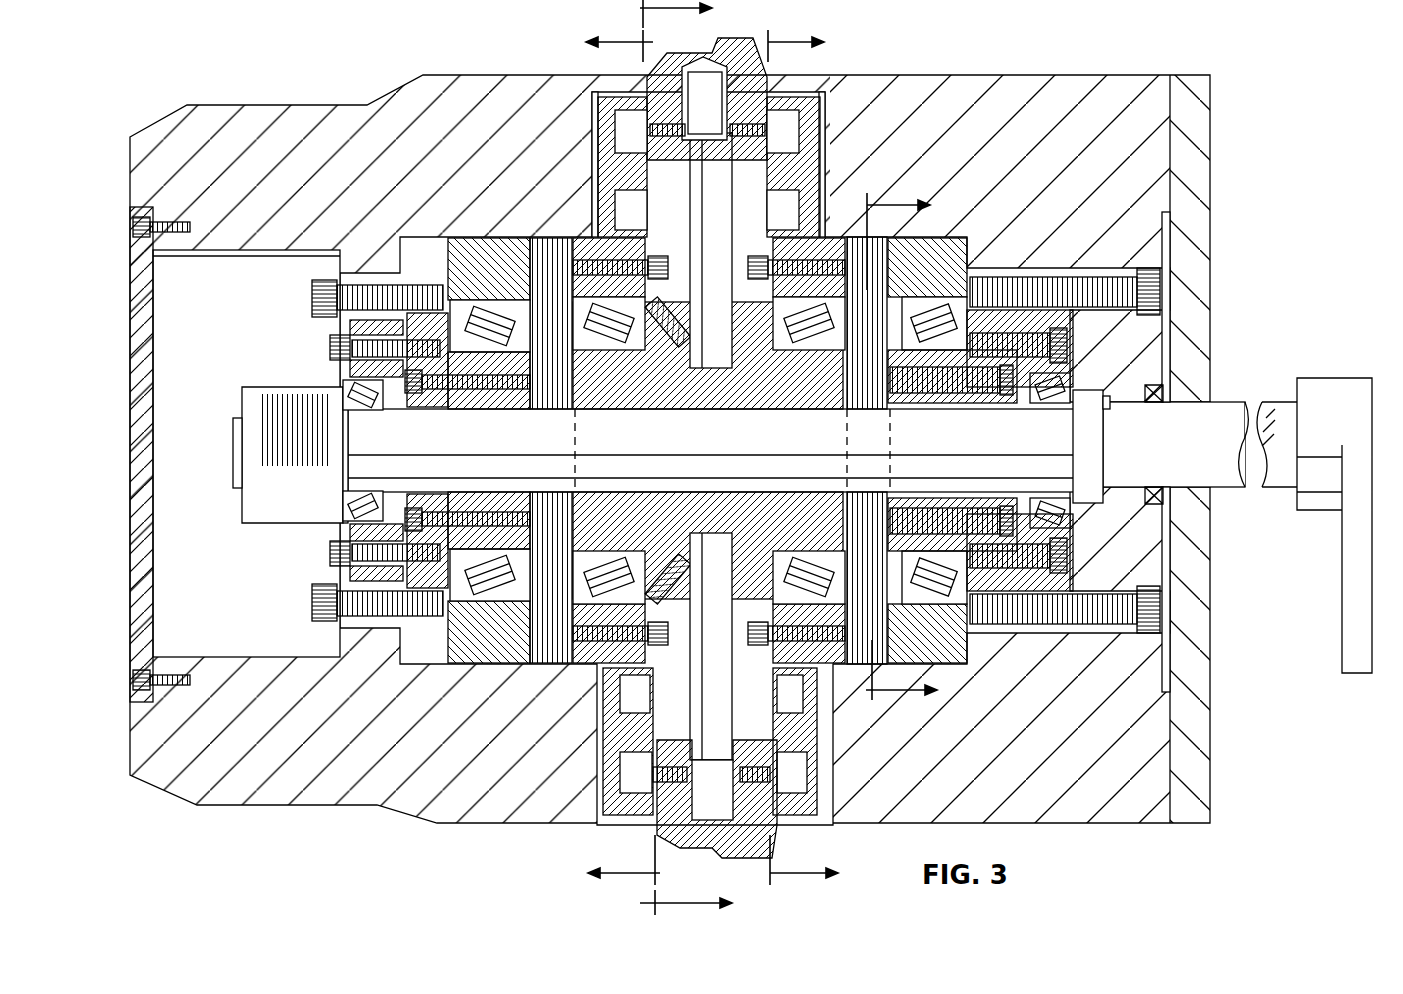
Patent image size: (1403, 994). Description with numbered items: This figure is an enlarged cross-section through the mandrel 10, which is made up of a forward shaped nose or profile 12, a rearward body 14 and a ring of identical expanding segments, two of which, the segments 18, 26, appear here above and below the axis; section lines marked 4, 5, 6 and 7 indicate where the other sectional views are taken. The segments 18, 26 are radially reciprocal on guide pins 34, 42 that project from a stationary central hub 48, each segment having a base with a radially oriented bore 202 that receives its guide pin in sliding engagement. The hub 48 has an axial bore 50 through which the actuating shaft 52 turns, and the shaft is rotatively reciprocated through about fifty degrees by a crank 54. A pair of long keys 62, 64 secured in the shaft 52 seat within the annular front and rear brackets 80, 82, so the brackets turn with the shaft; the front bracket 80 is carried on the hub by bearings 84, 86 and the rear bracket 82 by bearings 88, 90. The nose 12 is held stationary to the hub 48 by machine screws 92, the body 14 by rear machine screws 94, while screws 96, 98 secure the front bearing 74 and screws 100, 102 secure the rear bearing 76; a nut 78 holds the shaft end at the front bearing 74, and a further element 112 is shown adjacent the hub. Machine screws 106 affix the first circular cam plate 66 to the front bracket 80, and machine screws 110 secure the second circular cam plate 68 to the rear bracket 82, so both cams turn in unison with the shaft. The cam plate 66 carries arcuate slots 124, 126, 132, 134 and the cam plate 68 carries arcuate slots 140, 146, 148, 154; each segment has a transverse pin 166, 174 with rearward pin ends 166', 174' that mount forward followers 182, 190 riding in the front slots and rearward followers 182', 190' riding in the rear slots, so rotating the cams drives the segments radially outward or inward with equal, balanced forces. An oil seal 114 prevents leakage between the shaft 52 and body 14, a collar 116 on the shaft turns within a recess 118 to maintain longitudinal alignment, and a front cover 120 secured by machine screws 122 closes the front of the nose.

The section line 4 is at (613, 457).
The section line 5 is at (808, 457).
The section line 6 is at (694, 459).
The section line 7 is at (908, 448).
The mandrel 10 is at (914, 59).
The nose profile 12 is at (311, 105).
The body 14 is at (1010, 78).
The expanding segment 18 is at (672, 58).
The expanding segment 26 is at (683, 845).
The guide pin 34 is at (692, 180).
The guide pin 42 is at (733, 590).
The central hub 48 is at (640, 490).
The axial bore 50 is at (767, 492).
The actuating shaft 52 is at (1218, 410).
The crank 54 is at (1335, 385).
The long key 62 is at (540, 405).
The long key 64 is at (880, 400).
The first circular cam plate 66 is at (605, 160).
The second circular cam plate 68 is at (800, 148).
The front bearing 74 is at (355, 392).
The rear bearing 76 is at (1065, 515).
The nut 78 is at (262, 515).
The front bracket 80 is at (492, 255).
The rear bracket 82 is at (950, 255).
The front bearing 84 is at (470, 268).
The rear bearing 86 is at (625, 380).
The front bearing 88 is at (780, 300).
The rear bearing 90 is at (905, 240).
The machine screws 92 is at (312, 288).
The rear machine screws 94 is at (1120, 275).
The machine screws 96 is at (330, 350).
The machine screws 98 is at (420, 402).
The rear machine screws 100 is at (1062, 328).
The rear machine screws 102 is at (960, 396).
The machine screws 106 is at (645, 260).
The machine screws 110 is at (780, 262).
The pin 112 is at (680, 300).
The oil seal 114 is at (1170, 372).
The collar 116 is at (1080, 440).
The recess 118 is at (1106, 406).
The front cover 120 is at (175, 350).
The machine screws 122 is at (135, 222).
The arcuate slot 124 is at (615, 130).
The arcuate slot 126 is at (625, 208).
The arcuate slot 132 is at (615, 768).
The arcuate slot 134 is at (640, 700).
The arcuate slot 140 is at (822, 100).
The arcuate slot 146 is at (785, 700).
The arcuate slot 148 is at (815, 775).
The arcuate slot 154 is at (790, 208).
The transverse pin 166 is at (660, 155).
The spring 166' is at (748, 155).
The transverse pin 174 is at (672, 747).
The spring 174' is at (752, 747).
The forward follower 182 is at (617, 100).
The rearward follower 182' is at (796, 100).
The forward follower 190 is at (597, 779).
The rearward follower 190' is at (831, 777).
The radially oriented bore 202 is at (720, 128).